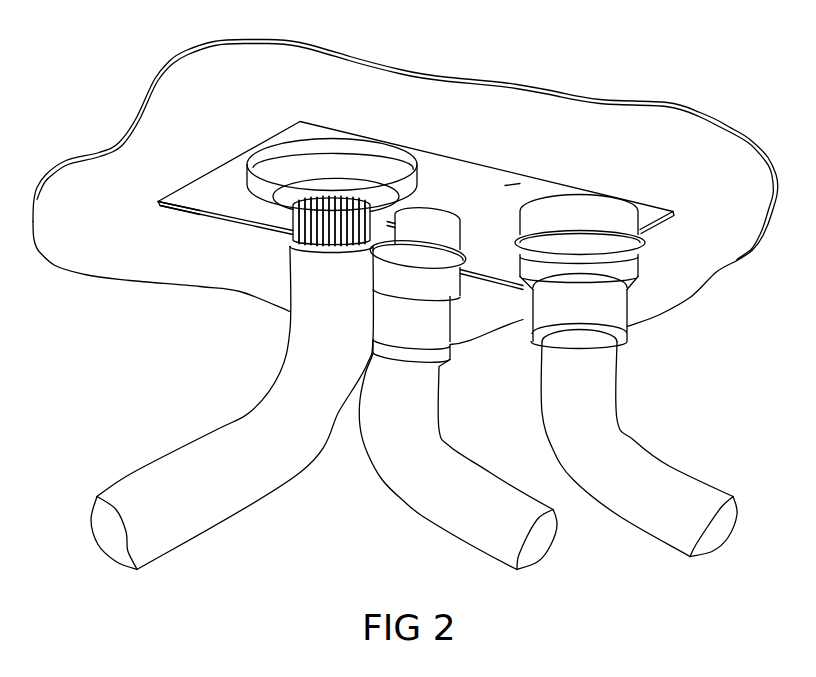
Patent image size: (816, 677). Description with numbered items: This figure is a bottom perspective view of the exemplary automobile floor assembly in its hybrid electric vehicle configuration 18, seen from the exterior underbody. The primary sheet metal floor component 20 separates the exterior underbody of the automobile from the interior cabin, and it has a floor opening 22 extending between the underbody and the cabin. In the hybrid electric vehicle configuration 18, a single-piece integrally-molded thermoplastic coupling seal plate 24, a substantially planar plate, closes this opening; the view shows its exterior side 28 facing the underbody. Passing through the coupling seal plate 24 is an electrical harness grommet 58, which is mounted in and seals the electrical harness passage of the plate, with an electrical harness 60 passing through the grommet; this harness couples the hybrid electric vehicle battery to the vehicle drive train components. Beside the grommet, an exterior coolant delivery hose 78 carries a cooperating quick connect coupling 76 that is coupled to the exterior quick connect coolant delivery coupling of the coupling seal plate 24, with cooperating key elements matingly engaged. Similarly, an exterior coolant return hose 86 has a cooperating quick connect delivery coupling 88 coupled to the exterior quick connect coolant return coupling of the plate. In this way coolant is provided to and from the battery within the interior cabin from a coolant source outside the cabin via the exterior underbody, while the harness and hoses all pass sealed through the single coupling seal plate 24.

The hybrid electric vehicle configuration 18 is at (64, 481).
The sheet metal floor component 20 is at (653, 123).
The floor opening 22 is at (215, 213).
The coupling seal plate 24 is at (463, 204).
The exterior side 28 is at (513, 185).
The electrical harness grommet 58 is at (368, 168).
The electrical harness 60 is at (305, 357).
The cooperating quick connect coupling 76 is at (448, 290).
The exterior coolant delivery hose 78 is at (433, 506).
The exterior coolant return hose 86 is at (673, 483).
The cooperating quick connect delivery coupling 88 is at (600, 307).